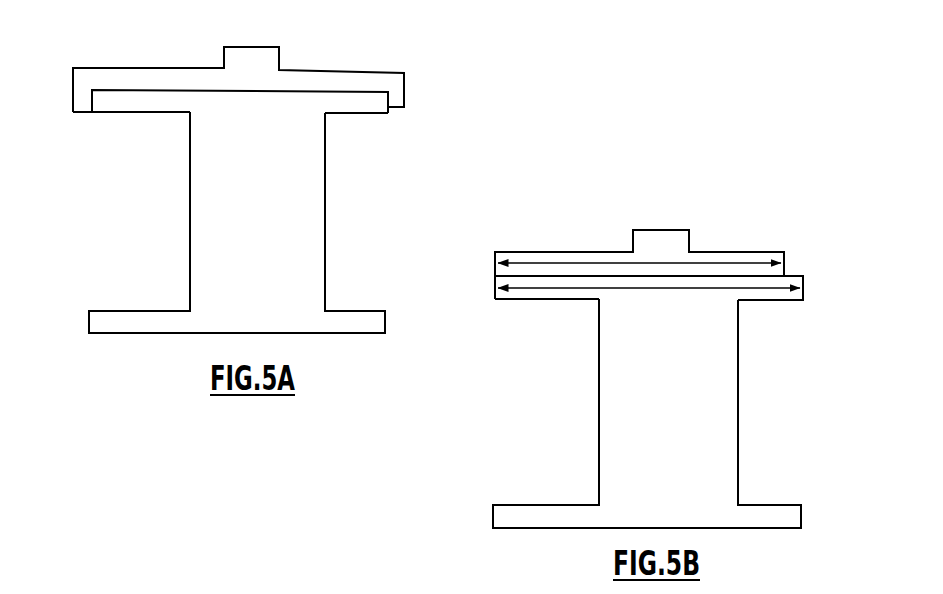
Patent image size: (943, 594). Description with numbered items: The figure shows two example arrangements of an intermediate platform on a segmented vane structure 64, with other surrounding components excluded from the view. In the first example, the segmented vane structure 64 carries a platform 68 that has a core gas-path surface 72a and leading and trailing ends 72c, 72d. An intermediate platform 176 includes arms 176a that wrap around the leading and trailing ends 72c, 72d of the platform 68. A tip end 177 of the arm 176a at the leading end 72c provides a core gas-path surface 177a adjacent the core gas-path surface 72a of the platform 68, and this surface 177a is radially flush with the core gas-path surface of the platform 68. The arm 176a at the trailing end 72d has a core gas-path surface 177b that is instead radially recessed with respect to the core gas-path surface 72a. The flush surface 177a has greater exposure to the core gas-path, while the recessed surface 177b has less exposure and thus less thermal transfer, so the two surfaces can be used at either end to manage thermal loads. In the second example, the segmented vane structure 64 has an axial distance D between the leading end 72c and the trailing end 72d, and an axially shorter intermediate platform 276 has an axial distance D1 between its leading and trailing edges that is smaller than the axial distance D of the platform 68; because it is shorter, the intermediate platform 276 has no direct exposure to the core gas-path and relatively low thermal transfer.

In FIG. 5A, the segmented vane structure 64 is at (188, 202).
In FIG. 5B, the segmented vane structure 64 is at (597, 396).
In FIG. 5A, the inner platform 68 is at (353, 117).
In FIG. 5B, the inner platform 68 is at (567, 304).
In FIG. 5A, the core gas-path surface 72a is at (139, 111).
In FIG. 5A, the leading end 72c is at (102, 117).
In FIG. 5B, the leading end 72c is at (501, 306).
In FIG. 5A, the trailing end 72d is at (389, 120).
In FIG. 5B, the trailing end 72d is at (797, 306).
In FIG. 5A, the intermediate platform 176 is at (332, 70).
In FIG. 5A, the arm 176a is at (83, 97).
In FIG. 5A, the tip end 177 is at (79, 117).
In FIG. 5A, the core gas-path surface 177a is at (90, 117).
In FIG. 5A, the core gas-path surface 177b is at (403, 111).
In FIG. 5B, the intermediate platform 276 is at (705, 250).
In FIG. 5B, the axial distance D is at (555, 287).
In FIG. 5B, the axial distance D1 is at (591, 262).